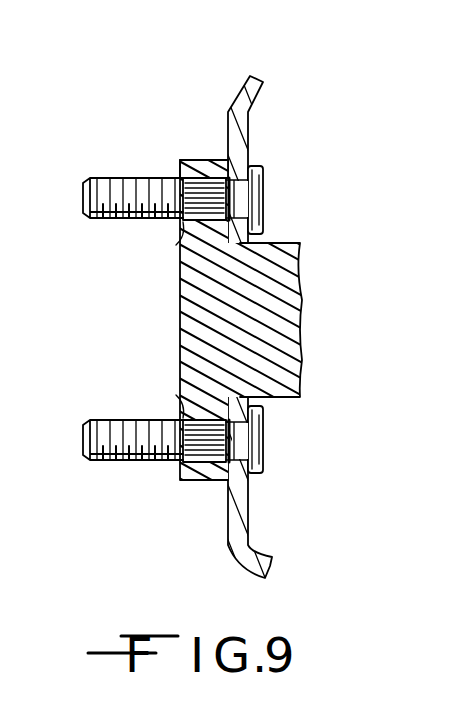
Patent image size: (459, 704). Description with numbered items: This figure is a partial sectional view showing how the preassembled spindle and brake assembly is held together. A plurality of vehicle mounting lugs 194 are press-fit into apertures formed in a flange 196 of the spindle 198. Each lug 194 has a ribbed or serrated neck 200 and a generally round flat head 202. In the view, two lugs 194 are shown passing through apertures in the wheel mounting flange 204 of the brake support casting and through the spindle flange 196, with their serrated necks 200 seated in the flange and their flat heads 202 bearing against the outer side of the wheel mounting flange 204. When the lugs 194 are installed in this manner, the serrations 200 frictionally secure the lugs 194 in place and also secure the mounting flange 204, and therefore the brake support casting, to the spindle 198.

The vehicle mounting lug 194 is at (106, 178).
The flange 196 is at (198, 160).
The spindle 198 is at (298, 243).
The serrated neck 200 is at (183, 238).
The flat head 202 is at (266, 196).
The wheel mounting flange 204 is at (243, 84).